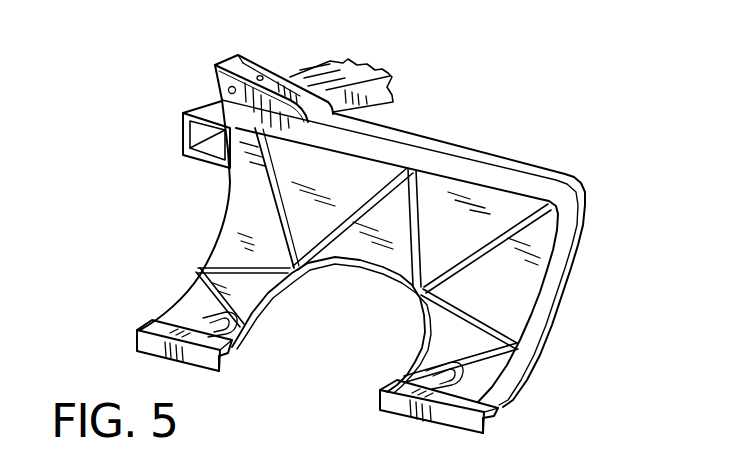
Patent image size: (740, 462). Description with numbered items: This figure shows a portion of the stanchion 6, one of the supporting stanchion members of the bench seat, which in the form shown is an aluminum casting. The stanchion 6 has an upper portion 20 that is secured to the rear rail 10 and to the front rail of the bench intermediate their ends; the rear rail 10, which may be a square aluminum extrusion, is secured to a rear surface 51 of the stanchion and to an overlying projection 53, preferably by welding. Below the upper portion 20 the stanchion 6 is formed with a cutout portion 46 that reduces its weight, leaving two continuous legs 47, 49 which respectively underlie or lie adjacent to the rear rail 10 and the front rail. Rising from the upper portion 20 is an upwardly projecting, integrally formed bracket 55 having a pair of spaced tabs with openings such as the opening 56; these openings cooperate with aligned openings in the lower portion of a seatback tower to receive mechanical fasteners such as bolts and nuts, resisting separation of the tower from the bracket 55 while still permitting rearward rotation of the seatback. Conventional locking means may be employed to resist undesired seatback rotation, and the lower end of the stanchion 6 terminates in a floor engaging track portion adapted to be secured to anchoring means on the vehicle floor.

The stanchion 6 is at (142, 323).
The rear rail 10 is at (180, 142).
The upper portion 20 is at (438, 142).
The cutout portion 46 is at (350, 340).
The leg 47 is at (180, 295).
The leg 49 is at (520, 367).
The rear surface 51 is at (217, 227).
The overlying projection 53 is at (207, 112).
The bracket 55 is at (220, 62).
The opening 56 is at (228, 90).